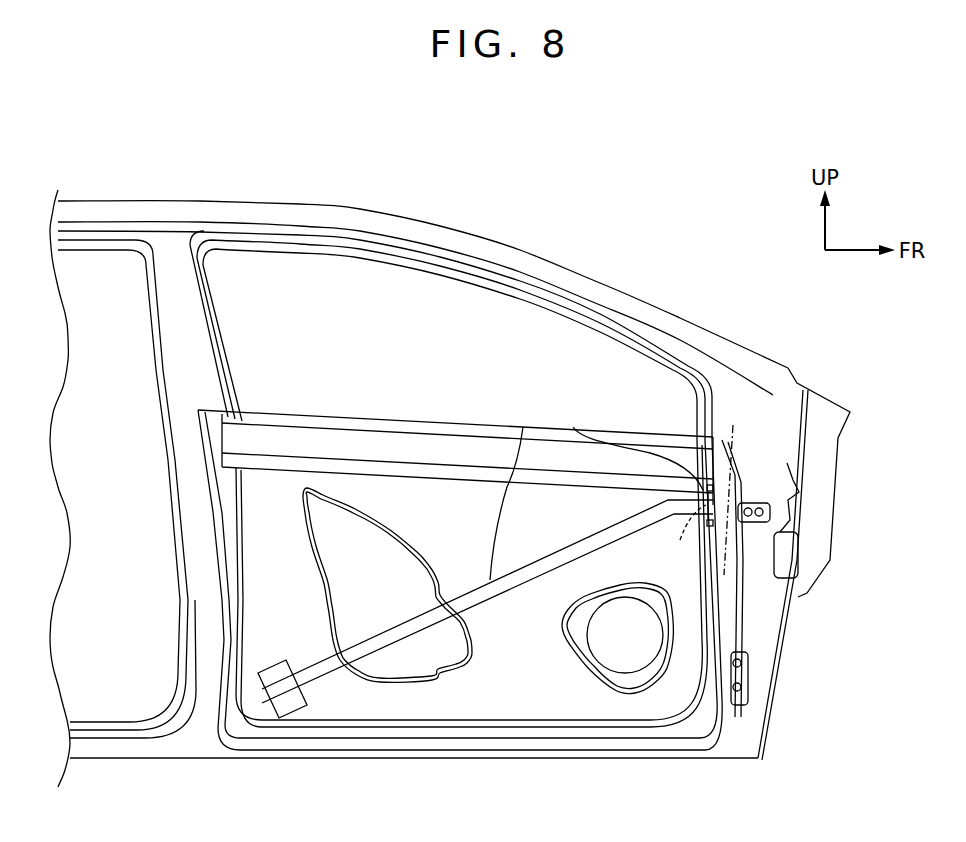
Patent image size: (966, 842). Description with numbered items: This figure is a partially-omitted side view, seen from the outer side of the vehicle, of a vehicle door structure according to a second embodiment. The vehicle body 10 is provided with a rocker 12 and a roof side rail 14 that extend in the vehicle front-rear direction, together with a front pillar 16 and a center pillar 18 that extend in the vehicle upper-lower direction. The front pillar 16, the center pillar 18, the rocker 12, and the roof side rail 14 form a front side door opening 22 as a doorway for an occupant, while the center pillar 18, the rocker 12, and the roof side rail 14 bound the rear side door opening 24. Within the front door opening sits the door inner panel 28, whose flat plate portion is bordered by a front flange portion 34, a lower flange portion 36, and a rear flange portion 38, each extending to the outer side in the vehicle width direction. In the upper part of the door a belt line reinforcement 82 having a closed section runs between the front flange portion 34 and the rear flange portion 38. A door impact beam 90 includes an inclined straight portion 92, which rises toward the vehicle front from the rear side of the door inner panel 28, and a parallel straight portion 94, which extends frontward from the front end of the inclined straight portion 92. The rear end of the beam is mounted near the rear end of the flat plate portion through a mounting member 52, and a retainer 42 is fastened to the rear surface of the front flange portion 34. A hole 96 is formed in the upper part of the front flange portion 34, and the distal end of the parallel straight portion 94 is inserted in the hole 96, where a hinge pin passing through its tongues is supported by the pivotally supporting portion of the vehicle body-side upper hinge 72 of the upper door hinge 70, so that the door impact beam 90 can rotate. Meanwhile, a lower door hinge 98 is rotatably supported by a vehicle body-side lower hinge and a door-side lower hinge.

The vehicle body 10 is at (600, 262).
The rocker 12 is at (145, 750).
The roof side rail 14 is at (347, 208).
The front pillar 16 is at (768, 625).
The center pillar 18 is at (193, 487).
The front side door opening 22 is at (233, 372).
The rear side door opening 24 is at (147, 331).
The door inner panel 28 is at (435, 417).
The front flange portion 34 is at (720, 730).
The lower flange portion 36 is at (478, 746).
The rear flange portion 38 is at (222, 593).
The retainer 42 is at (700, 483).
The mounting member 52 is at (273, 668).
The upper door hinge 70 is at (757, 480).
The vehicle body-side upper hinge 72 is at (770, 512).
The belt line reinforcement 82 is at (358, 432).
The door impact beam 90 is at (596, 460).
The inclined straight portion 92 is at (523, 427).
The parallel straight portion 94 is at (623, 431).
The hole 96 is at (656, 558).
The lower door hinge 98 is at (755, 676).